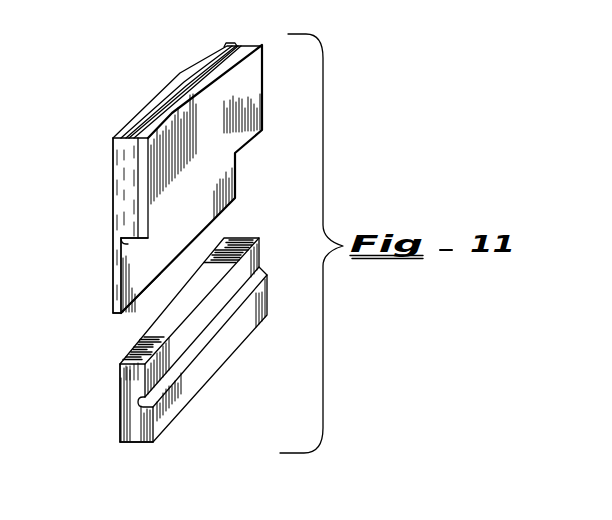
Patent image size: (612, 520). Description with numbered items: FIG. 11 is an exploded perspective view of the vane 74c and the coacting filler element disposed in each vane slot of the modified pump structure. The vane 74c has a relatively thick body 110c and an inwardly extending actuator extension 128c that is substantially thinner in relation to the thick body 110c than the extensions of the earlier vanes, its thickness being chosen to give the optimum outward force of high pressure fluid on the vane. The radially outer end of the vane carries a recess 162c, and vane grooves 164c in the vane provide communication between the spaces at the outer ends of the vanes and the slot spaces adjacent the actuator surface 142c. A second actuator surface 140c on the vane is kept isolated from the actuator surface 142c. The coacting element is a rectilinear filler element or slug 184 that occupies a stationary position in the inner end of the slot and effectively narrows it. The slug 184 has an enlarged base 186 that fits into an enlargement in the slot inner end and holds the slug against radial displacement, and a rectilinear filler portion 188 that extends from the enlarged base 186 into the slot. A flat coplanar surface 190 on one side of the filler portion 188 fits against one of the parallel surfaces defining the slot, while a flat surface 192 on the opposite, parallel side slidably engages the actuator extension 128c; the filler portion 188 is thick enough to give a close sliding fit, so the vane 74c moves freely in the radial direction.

The thick body 110c is at (244, 87).
The groove 162c is at (231, 53).
The vane groove 164c is at (131, 172).
The vane 74c is at (112, 206).
The actuator surface 142c is at (127, 245).
The actuator extension 128c is at (114, 288).
The actuator surface 140c is at (117, 317).
The flat coplanar surface 190 is at (250, 258).
The rectilinear filler portion 188 is at (132, 378).
The flat surface 192 is at (120, 401).
The slug 184 is at (118, 430).
The enlarged base 186 is at (139, 438).